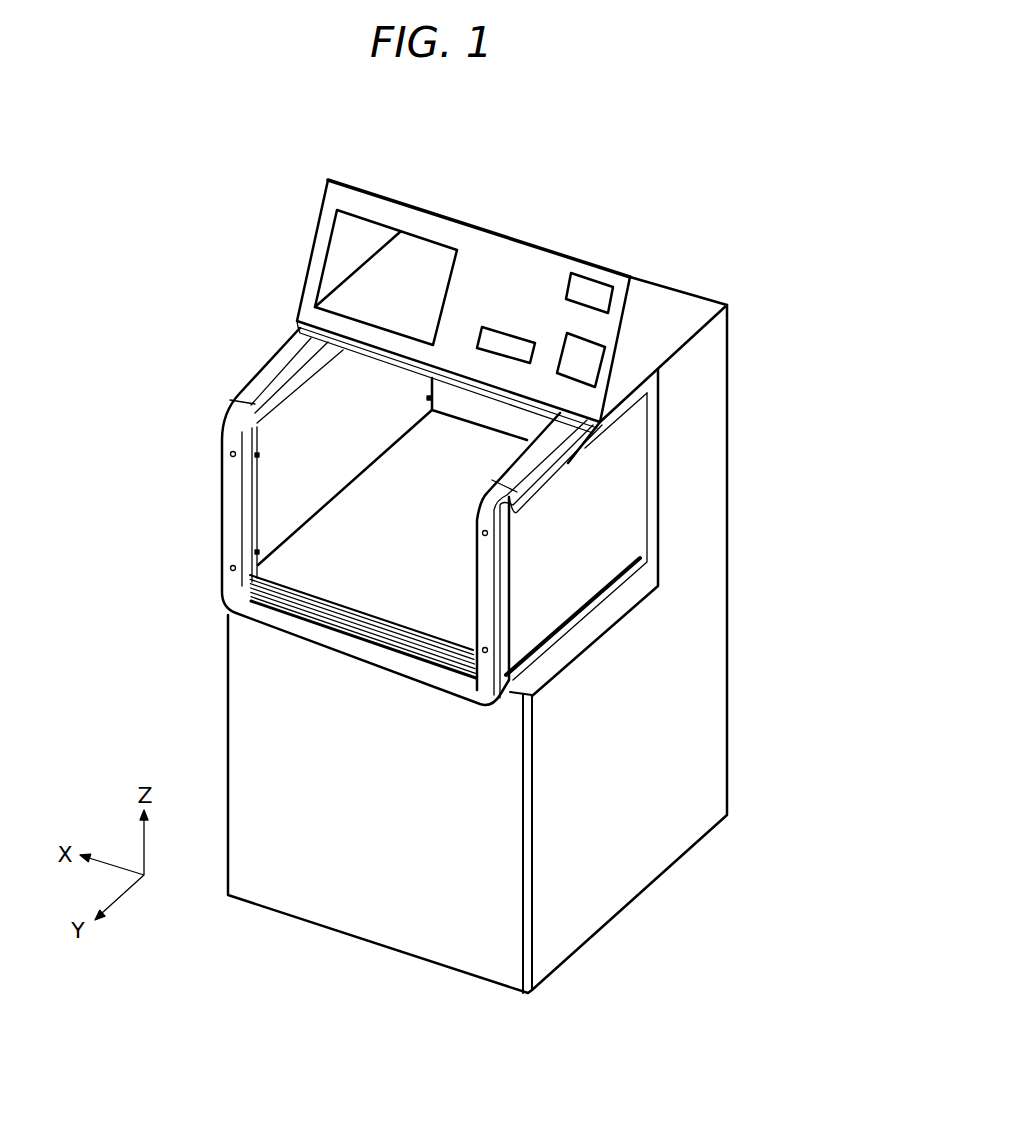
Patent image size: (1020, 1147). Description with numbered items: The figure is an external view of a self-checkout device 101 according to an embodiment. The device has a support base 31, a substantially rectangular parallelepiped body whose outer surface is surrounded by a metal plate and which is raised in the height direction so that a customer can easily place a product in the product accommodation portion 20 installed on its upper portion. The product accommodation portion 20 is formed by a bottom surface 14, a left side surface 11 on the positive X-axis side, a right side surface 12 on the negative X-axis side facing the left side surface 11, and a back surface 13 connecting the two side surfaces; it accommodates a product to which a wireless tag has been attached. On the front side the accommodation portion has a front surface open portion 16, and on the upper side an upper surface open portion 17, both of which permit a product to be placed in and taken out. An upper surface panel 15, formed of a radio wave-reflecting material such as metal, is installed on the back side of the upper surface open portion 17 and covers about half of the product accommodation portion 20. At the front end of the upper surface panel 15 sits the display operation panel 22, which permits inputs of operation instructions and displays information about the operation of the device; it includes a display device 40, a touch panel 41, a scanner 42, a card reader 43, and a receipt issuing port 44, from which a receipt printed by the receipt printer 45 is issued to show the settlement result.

The self-checkout device 101 is at (618, 140).
The left side surface 11 is at (254, 380).
The right side surface 12 is at (615, 523).
The back surface 13 is at (510, 423).
The bottom surface 14 is at (313, 568).
The upper surface panel 15 is at (673, 302).
The front surface open portion 16 is at (372, 578).
The upper surface open portion 17 is at (342, 382).
The product accommodation portion 20 is at (377, 513).
The display operation panel 22 is at (477, 250).
The support base 31 is at (625, 825).
The display device 40 is at (386, 237).
The touch panel 41 is at (365, 217).
The scanner 42 is at (600, 365).
The card reader 43 is at (589, 276).
The receipt issuing port 44 is at (527, 277).
The receipt printer 45 is at (505, 331).